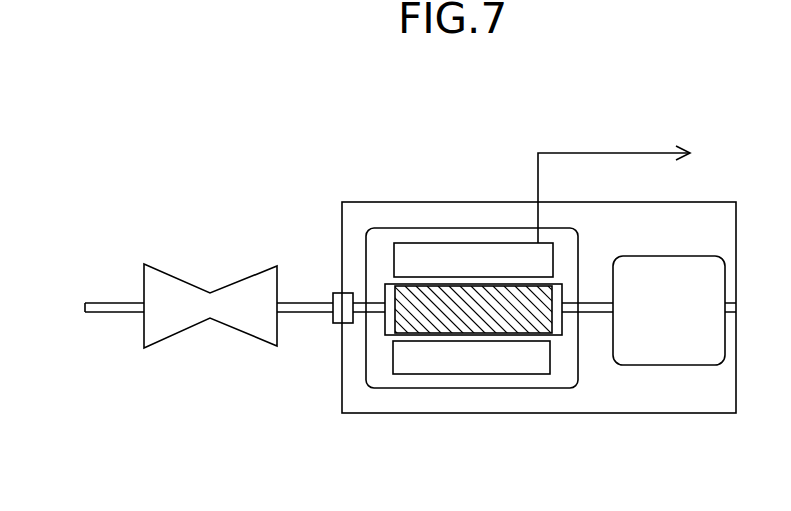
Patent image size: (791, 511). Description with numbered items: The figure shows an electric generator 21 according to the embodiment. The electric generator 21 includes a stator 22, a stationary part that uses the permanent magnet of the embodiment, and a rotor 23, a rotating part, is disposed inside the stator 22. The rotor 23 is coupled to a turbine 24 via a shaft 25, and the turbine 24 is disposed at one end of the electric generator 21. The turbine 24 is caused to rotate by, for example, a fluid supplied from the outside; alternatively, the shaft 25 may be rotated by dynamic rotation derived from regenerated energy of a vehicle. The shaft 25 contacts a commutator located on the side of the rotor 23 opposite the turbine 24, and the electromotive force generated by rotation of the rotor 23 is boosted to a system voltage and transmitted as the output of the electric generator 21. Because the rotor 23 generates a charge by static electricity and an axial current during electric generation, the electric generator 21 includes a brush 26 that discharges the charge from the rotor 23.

The electric generator 21 is at (382, 200).
The stator 22 is at (443, 365).
The rotor 23 is at (485, 327).
The turbine 24 is at (250, 278).
The shaft 25 is at (310, 312).
The brush 26 is at (659, 350).